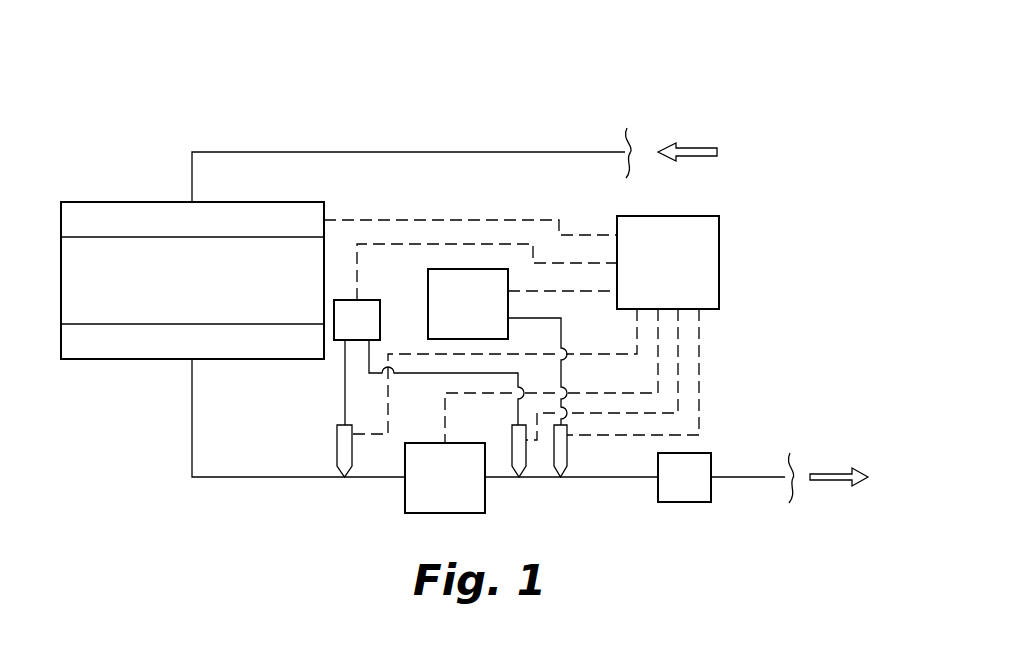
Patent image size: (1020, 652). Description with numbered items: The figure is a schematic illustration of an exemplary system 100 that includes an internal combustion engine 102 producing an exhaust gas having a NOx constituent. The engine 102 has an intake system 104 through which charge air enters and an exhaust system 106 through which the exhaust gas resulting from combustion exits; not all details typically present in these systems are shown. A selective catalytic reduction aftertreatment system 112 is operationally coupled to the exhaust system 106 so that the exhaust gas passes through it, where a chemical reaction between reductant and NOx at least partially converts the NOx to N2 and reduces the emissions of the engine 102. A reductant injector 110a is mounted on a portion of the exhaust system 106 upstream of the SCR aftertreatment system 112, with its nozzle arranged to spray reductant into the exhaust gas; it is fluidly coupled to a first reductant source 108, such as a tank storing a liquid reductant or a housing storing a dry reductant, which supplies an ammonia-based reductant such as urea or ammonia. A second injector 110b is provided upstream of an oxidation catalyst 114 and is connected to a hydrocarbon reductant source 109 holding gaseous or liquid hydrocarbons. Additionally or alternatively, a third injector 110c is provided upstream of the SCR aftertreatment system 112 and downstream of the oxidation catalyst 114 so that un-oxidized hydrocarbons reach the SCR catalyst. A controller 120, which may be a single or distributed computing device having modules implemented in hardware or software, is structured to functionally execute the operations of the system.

The system 100 is at (738, 84).
The internal combustion engine 102 is at (176, 292).
The intake system 104 is at (343, 152).
The exhaust system 106 is at (192, 432).
The first reductant source 108 is at (452, 317).
The hydrocarbon reductant source 109 is at (342, 332).
The reductant injector 110a is at (567, 447).
The second injector 110b is at (337, 449).
The third injector 110c is at (527, 457).
The selective catalytic reduction aftertreatment system 112 is at (668, 491).
The oxidation catalyst 114 is at (429, 489).
The controller 120 is at (652, 276).